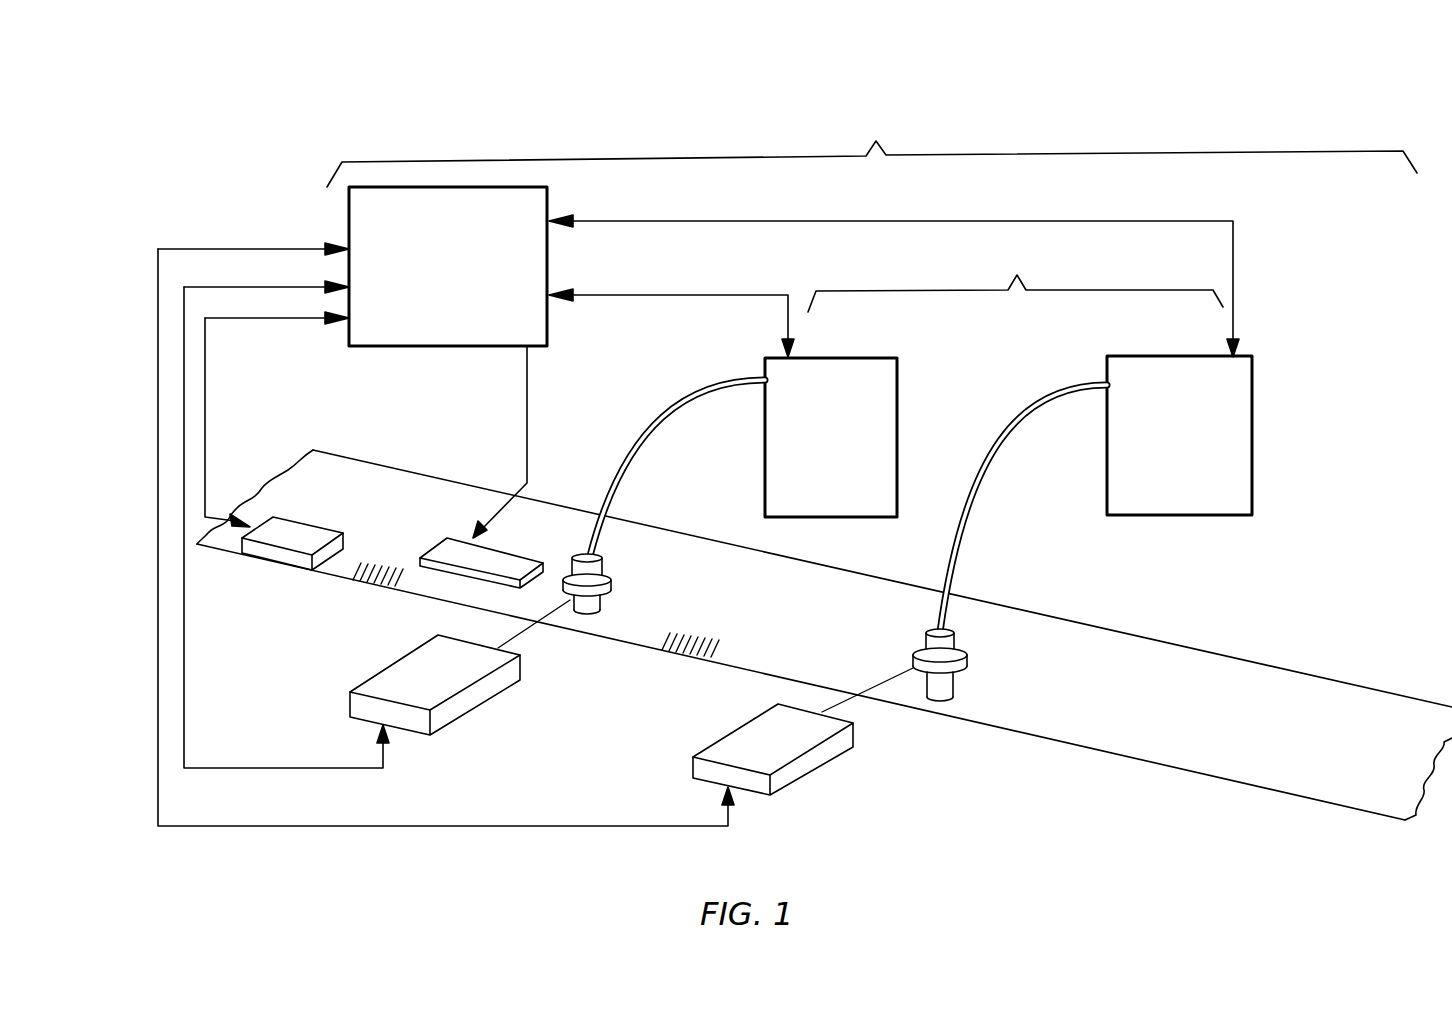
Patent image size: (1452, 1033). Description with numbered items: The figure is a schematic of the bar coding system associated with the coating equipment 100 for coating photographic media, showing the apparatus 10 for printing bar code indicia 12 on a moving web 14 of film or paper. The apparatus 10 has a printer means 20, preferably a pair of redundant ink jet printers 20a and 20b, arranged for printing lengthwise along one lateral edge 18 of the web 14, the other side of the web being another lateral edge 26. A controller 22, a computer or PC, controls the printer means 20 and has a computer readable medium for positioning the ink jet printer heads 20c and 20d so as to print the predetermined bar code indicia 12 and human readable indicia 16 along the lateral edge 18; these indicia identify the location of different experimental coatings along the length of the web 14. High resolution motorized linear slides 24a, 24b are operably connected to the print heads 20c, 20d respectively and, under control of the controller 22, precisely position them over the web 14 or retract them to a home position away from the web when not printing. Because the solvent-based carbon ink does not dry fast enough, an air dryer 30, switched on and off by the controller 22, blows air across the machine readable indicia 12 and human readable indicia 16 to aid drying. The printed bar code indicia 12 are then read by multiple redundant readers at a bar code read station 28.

The coating equipment 100 is at (1223, 132).
The apparatus 10 is at (872, 148).
The controller 22 is at (433, 348).
The printer means 20 is at (1015, 278).
The ink jet printer 20a is at (878, 357).
The ink jet printer 20b is at (1128, 356).
The ink jet printer head 20c is at (602, 600).
The ink jet printer head 20d is at (945, 687).
The bar code indicia 12 is at (667, 646).
The human readable indicia 16 is at (753, 668).
The web 14 is at (824, 657).
The another lateral edge of web 26 is at (1215, 652).
The lateral edge of web 18 is at (1277, 793).
The motorized linear slide 24a is at (357, 702).
The motorized linear slide 24b is at (813, 765).
The bar code read station 28 is at (282, 557).
The air dryer 30 is at (510, 553).